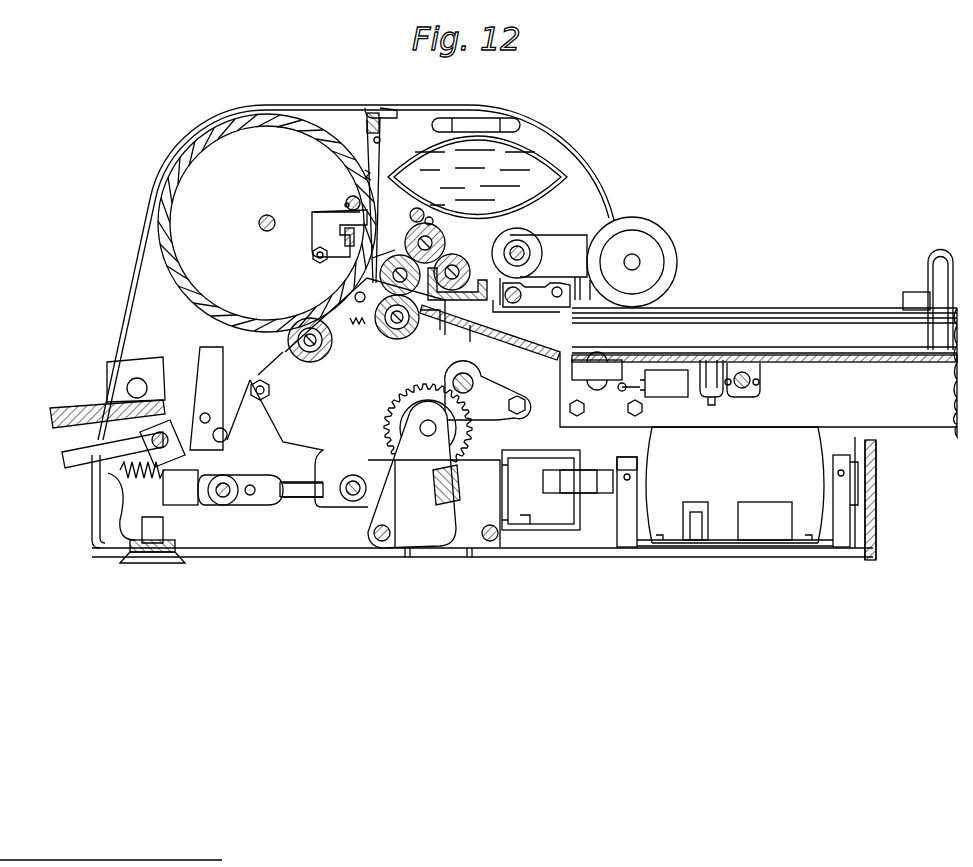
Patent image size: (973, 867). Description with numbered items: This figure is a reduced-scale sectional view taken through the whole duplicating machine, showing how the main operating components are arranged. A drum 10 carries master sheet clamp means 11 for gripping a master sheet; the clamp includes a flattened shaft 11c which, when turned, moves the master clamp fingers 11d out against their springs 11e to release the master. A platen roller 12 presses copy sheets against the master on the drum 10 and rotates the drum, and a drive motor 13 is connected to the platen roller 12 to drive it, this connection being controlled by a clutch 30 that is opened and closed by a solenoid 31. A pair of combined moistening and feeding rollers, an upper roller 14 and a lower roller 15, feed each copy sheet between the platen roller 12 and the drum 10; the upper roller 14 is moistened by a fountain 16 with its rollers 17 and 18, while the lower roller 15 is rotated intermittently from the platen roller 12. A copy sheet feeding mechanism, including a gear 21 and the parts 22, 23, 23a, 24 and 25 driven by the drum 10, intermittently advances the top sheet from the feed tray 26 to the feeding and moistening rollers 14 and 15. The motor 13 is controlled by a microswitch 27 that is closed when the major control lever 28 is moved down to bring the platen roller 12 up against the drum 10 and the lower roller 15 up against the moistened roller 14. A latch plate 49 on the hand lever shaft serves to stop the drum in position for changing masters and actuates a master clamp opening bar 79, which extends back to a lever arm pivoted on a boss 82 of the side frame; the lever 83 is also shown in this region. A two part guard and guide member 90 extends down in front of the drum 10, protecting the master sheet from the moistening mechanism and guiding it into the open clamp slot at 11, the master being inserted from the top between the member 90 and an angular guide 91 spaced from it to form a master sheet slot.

The drum 10 is at (182, 285).
The master sheet clamp means 11 is at (350, 200).
The flattened shaft 11c is at (345, 206).
The master clamp fingers 11d is at (318, 217).
The springs 11e is at (346, 236).
The platen roller 12 is at (321, 357).
The drive motor 13 is at (709, 487).
The upper combined moistening and feeding roller 14 is at (392, 268).
The lower combined feeding and moistening roller 15 is at (397, 340).
The fountain 16 is at (474, 298).
The roller 17 is at (447, 291).
The roller 18 is at (447, 240).
The gear 21 is at (365, 173).
The copy sheet feeding mechanism part 22 is at (391, 137).
The copy sheet feeding mechanism part 23 is at (533, 231).
The gear hub 23a is at (524, 250).
The copy sheet feeding mechanism part 24 is at (548, 256).
The copy sheet feeding mechanism part 25 is at (677, 262).
The feed tray 26 is at (546, 345).
The microswitch 27 is at (180, 487).
The major control lever 28 is at (63, 452).
The clutch 30 is at (413, 389).
The solenoid 31 is at (533, 463).
The latch plate 49 is at (563, 308).
The master clamp opening bar 79 is at (432, 352).
The boss 82 is at (223, 431).
The lever 83 is at (297, 443).
The two part guard and guide member 90 is at (375, 152).
The angular guide 91 is at (376, 110).